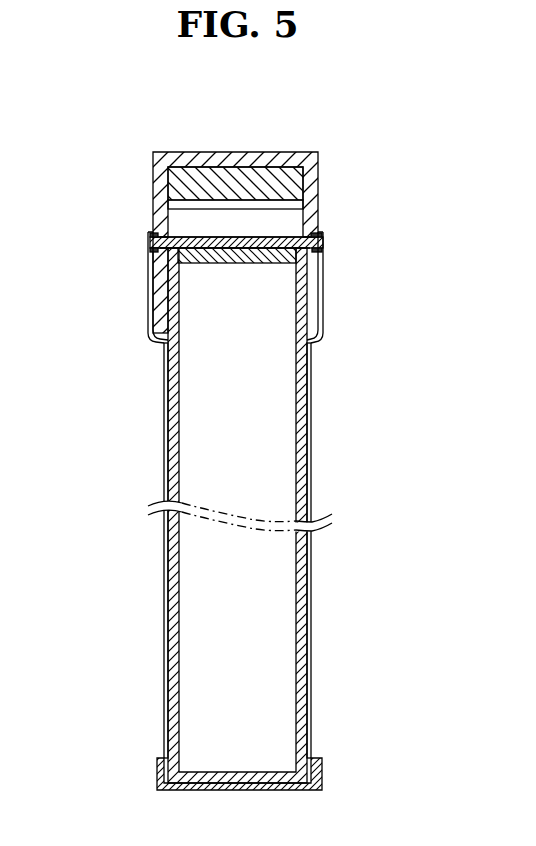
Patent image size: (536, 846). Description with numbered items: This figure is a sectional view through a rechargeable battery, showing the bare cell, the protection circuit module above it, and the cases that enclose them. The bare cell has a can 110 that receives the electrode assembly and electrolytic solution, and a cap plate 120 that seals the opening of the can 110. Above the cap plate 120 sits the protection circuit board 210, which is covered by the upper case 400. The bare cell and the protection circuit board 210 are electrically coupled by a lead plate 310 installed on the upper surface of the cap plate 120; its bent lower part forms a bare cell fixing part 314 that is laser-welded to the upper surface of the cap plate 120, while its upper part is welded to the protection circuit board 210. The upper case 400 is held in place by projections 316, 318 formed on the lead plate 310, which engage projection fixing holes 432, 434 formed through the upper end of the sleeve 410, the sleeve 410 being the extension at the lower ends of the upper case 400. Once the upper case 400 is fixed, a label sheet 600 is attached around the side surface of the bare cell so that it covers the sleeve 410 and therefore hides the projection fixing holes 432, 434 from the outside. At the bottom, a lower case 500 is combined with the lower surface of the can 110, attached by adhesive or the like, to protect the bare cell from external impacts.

The upper case 400 is at (214, 160).
The protection circuit board 210 is at (266, 183).
The lead plate 310 is at (300, 228).
The bare cell fixing part 314 is at (176, 240).
The projection 318 is at (152, 247).
The projection 316 is at (318, 246).
The projection fixing hole 434 is at (150, 241).
The projection fixing hole 432 is at (323, 240).
The sleeve 410 is at (150, 292).
The cap plate 120 is at (277, 266).
The can 110 is at (306, 374).
The label sheet 600 is at (313, 444).
The lower case 500 is at (322, 781).